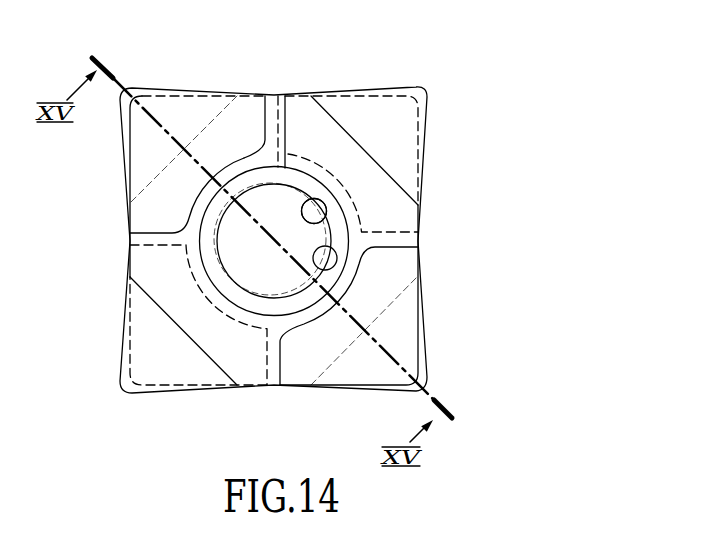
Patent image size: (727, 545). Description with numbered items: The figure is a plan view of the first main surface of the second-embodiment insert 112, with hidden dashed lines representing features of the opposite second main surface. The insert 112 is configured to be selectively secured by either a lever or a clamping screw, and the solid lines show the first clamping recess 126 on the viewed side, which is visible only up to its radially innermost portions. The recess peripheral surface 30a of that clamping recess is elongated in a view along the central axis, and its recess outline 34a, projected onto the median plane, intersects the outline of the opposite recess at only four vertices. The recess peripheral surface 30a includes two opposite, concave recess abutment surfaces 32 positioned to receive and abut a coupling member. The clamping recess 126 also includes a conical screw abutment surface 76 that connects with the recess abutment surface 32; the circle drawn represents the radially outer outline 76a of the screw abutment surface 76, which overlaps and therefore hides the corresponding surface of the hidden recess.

The insert 112 is at (508, 141).
The screw abutment surface 76 is at (286, 175).
The radially outer outline 76a is at (265, 150).
The first clamping recess 126 is at (210, 201).
The recess peripheral surface 30a is at (323, 223).
The recess outline 34a is at (425, 193).
The recess abutment surface 32 is at (325, 262).